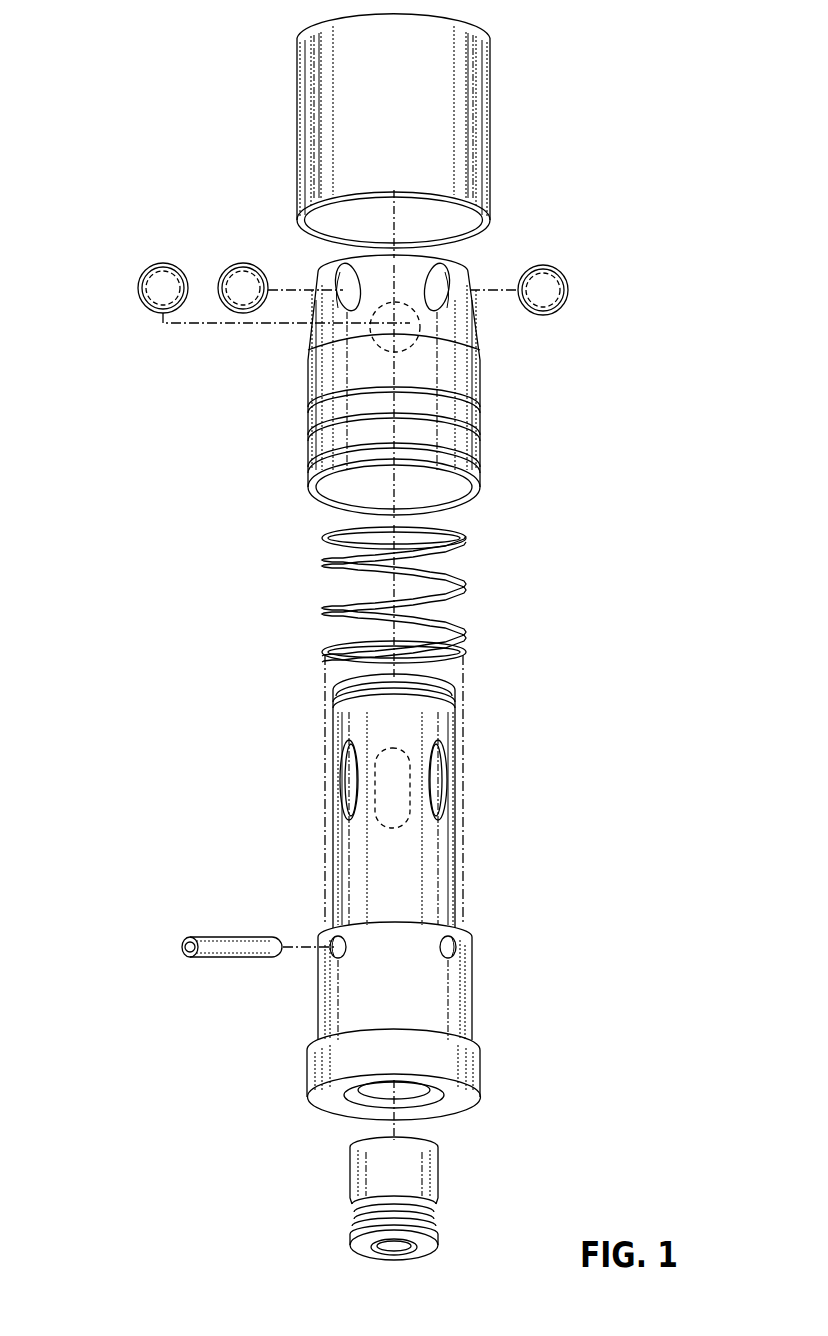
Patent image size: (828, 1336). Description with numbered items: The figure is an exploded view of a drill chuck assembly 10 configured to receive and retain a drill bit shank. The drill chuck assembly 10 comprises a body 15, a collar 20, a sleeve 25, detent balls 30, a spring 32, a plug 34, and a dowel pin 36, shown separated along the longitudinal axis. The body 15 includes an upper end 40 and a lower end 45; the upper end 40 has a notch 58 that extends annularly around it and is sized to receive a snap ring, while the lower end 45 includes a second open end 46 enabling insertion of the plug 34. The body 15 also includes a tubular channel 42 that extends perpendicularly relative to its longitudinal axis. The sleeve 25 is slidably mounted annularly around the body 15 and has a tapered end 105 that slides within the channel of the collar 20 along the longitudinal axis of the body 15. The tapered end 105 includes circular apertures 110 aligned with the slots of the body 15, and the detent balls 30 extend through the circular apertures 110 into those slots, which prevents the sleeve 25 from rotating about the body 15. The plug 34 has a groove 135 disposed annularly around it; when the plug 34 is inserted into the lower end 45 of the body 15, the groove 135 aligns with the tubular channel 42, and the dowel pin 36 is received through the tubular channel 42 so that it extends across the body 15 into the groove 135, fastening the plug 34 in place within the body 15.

The drill chuck assembly 10 is at (115, 75).
The collar 20 is at (325, 158).
The detent balls 30 is at (547, 290).
The sleeve 25 is at (415, 371).
The circular apertures 110 is at (345, 278).
The tapered end 105 is at (478, 325).
The spring 32 is at (326, 562).
The body 15 is at (411, 791).
The upper end 40 is at (333, 690).
The notch 58 is at (457, 688).
The dowel pin 36 is at (224, 937).
The lower end 45 is at (418, 1036).
The tubular channel 42 is at (455, 945).
The second open end 46 is at (420, 1100).
The plug 34 is at (383, 1198).
The groove 135 is at (433, 1216).